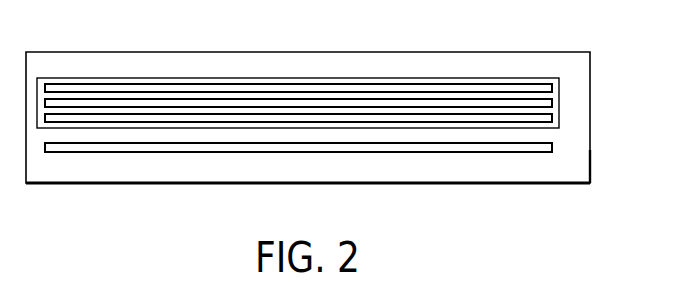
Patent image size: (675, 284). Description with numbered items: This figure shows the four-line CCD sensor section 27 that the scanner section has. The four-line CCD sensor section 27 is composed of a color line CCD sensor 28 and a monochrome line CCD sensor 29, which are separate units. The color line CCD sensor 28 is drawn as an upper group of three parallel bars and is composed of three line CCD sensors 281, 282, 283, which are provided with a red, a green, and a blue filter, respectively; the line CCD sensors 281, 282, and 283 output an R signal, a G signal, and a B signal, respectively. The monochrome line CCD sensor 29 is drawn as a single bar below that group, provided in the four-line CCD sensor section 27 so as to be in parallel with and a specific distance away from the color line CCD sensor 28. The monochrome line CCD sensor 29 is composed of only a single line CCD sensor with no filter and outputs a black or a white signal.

The 4-line CCD sensor section 27 is at (177, 52).
The color line CCD sensor 28 is at (536, 77).
The line CCD sensor 281 is at (553, 88).
The line CCD sensor 282 is at (553, 101).
The line CCD sensor 283 is at (554, 116).
The monochrome line CCD sensor 29 is at (537, 153).